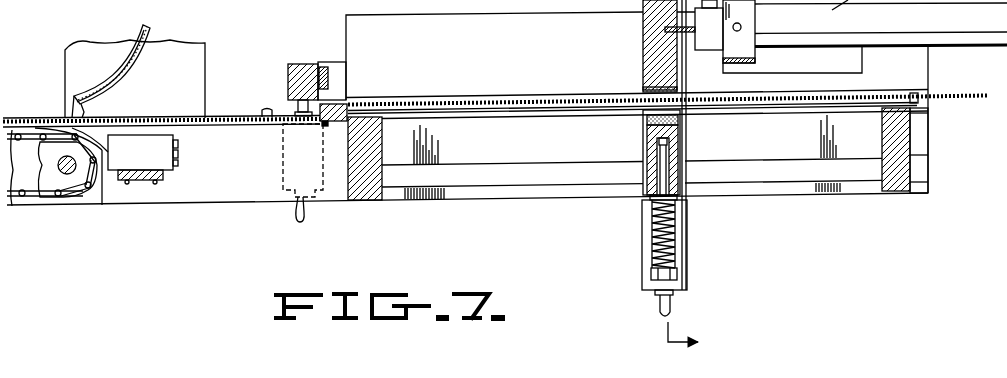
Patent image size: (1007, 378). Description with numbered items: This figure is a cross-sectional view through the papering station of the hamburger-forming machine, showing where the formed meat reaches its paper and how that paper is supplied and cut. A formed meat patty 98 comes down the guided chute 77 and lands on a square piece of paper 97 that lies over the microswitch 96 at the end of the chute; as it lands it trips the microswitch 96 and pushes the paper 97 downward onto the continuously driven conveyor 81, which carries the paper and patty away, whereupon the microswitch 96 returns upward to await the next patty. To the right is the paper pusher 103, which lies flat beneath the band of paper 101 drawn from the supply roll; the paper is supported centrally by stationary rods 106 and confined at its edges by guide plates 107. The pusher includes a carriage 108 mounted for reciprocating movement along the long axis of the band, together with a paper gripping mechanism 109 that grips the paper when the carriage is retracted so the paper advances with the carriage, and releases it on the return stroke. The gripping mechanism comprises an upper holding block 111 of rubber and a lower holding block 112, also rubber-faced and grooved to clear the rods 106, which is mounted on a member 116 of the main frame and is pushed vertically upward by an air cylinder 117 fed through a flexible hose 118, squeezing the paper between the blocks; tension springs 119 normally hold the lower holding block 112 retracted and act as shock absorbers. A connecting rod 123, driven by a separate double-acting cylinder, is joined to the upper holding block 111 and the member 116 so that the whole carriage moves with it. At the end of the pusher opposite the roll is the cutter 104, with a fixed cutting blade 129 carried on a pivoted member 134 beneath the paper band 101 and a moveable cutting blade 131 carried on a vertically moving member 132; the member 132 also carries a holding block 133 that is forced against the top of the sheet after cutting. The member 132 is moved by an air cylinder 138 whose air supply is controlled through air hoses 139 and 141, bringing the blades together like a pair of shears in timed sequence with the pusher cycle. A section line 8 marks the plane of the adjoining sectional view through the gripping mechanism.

The section line 8— 8 is at (695, 335).
The guided chute 77 is at (138, 72).
The conveyor 81 is at (23, 197).
The microswitch 96 is at (103, 203).
The paper 97 is at (25, 117).
The meat patty 98 is at (124, 60).
The band of paper 101 is at (961, 99).
The paper pusher 103 is at (735, 122).
The cutter 104 is at (313, 72).
The rods 106 is at (530, 110).
The guide plates 107 is at (455, 99).
The carriage 108 is at (640, 50).
The paper gripping mechanism 109 is at (642, 147).
The upper holding block 111 is at (643, 90).
The lower holding block 112 is at (647, 122).
The member of the main frame 116 is at (683, 178).
The air cylinder 117 is at (645, 233).
The hose 118 is at (659, 303).
The tension springs 119 is at (677, 253).
The connecting rod 123 is at (697, 38).
The fixed cutting blade 129 is at (328, 126).
The moveable cutting blade 131 is at (313, 66).
The member 132 is at (288, 80).
The holding block 133 is at (329, 80).
The member 134 is at (340, 100).
The air cylinder 138 is at (283, 172).
The air hose 139 is at (306, 216).
The air hose 141 is at (276, 129).